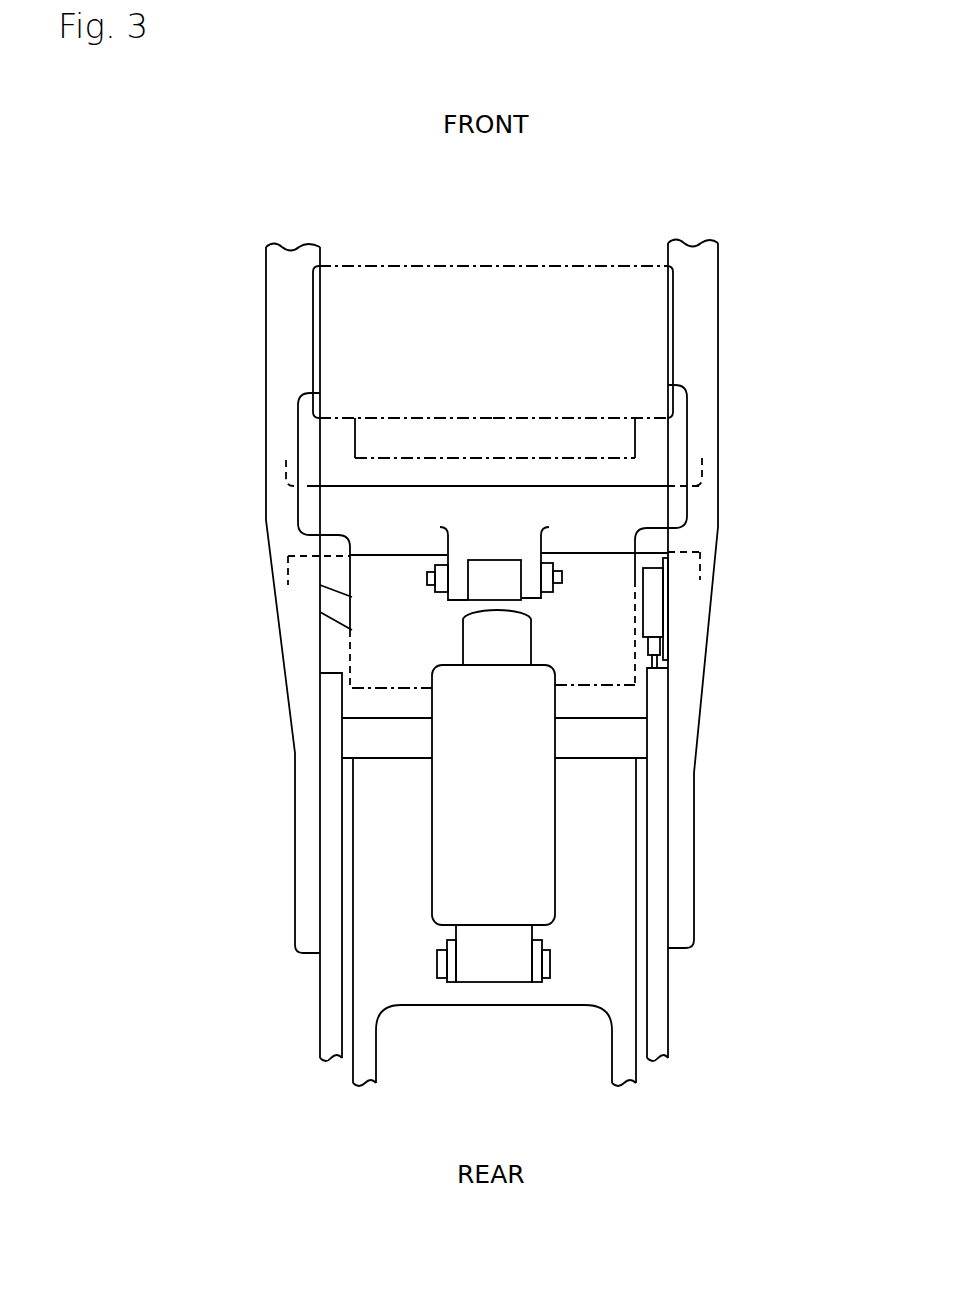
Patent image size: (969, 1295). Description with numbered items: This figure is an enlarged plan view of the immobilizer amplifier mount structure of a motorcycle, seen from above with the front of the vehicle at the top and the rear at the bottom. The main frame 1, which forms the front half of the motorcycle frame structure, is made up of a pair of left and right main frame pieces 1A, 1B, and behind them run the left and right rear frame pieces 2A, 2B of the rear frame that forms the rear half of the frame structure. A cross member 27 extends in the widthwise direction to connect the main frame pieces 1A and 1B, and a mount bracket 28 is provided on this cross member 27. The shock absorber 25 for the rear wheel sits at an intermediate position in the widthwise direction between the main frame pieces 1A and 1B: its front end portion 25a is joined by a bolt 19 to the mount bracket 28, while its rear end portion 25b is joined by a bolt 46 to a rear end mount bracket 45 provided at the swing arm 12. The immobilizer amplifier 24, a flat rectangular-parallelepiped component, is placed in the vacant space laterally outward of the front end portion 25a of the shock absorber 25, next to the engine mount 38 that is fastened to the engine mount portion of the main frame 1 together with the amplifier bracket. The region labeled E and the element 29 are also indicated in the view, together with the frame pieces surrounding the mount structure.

The main frame 1 is at (552, 213).
The left main frame piece 1A is at (289, 372).
The right main frame piece 1B is at (697, 343).
The left rear frame piece 2A is at (340, 806).
The right rear frame piece 2B is at (655, 773).
The swing arm 12 is at (620, 1015).
The bolt 19 is at (437, 583).
The immobilizer amplifier 24 is at (653, 608).
The shock absorber 25 is at (467, 838).
The front end portion of the shock absorber 25a is at (490, 606).
The rear end portion of the shock absorber 25b is at (503, 965).
The cross member 27 is at (360, 513).
The mount bracket 28 is at (462, 572).
The frame member 29 is at (675, 362).
The engine mount 38 is at (643, 598).
The rear end mount bracket 45 is at (452, 985).
The bolt 46 is at (440, 965).
The engine mount region E is at (688, 433).